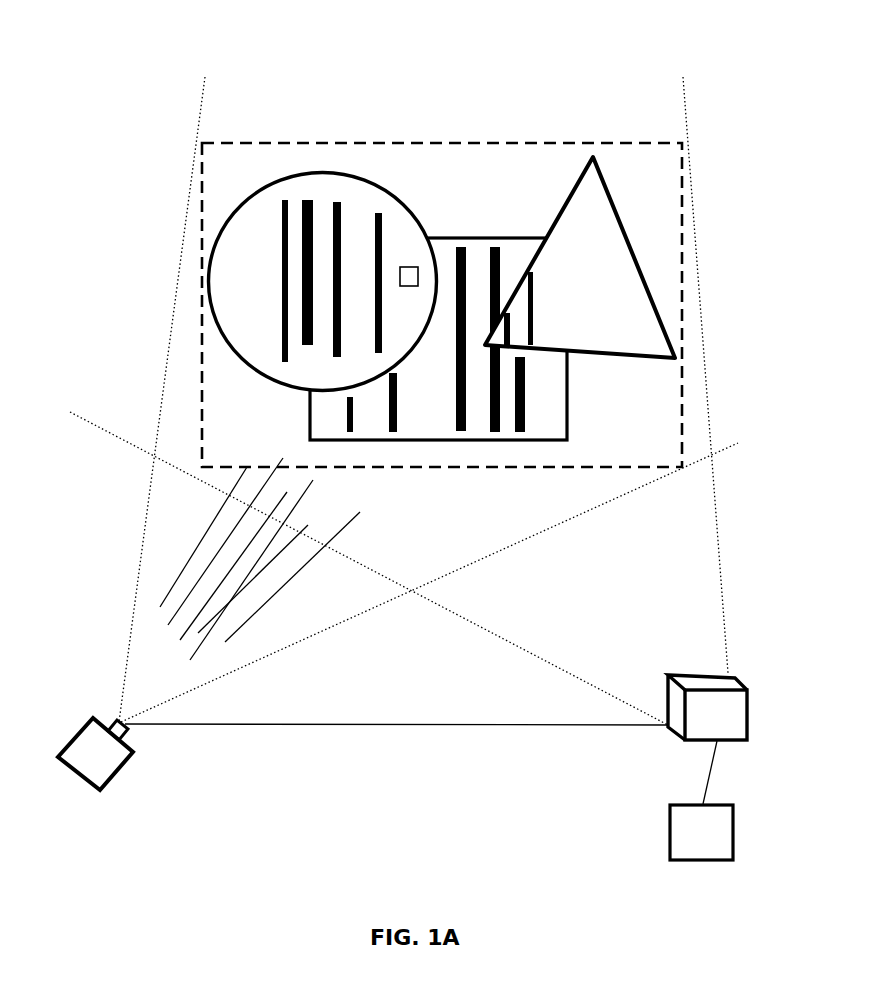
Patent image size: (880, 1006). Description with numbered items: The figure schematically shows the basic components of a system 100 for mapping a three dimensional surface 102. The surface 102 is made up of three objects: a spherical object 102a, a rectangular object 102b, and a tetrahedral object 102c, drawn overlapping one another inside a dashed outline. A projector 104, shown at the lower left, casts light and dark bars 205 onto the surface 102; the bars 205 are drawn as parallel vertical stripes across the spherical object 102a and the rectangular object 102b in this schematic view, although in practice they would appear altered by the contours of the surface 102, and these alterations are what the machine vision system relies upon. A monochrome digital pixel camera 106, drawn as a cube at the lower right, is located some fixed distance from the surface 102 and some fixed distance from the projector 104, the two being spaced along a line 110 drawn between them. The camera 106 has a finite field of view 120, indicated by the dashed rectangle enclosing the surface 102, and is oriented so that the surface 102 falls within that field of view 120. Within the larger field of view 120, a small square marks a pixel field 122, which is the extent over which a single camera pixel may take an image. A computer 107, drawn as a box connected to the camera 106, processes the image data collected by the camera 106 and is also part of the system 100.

The system 100 is at (158, 62).
The three dimensional surface 102 is at (622, 89).
The spherical object 102a is at (255, 193).
The rectangular object 102b is at (460, 237).
The tetrahedral object 102c is at (562, 200).
The projector 104 is at (70, 742).
The monochrome digital pixel camera 106 is at (747, 708).
The computer 107 is at (670, 833).
The line 110 is at (576, 728).
The field of view 120 is at (650, 141).
The pixel field 122 is at (407, 266).
The light and dark bars 205 is at (322, 202).